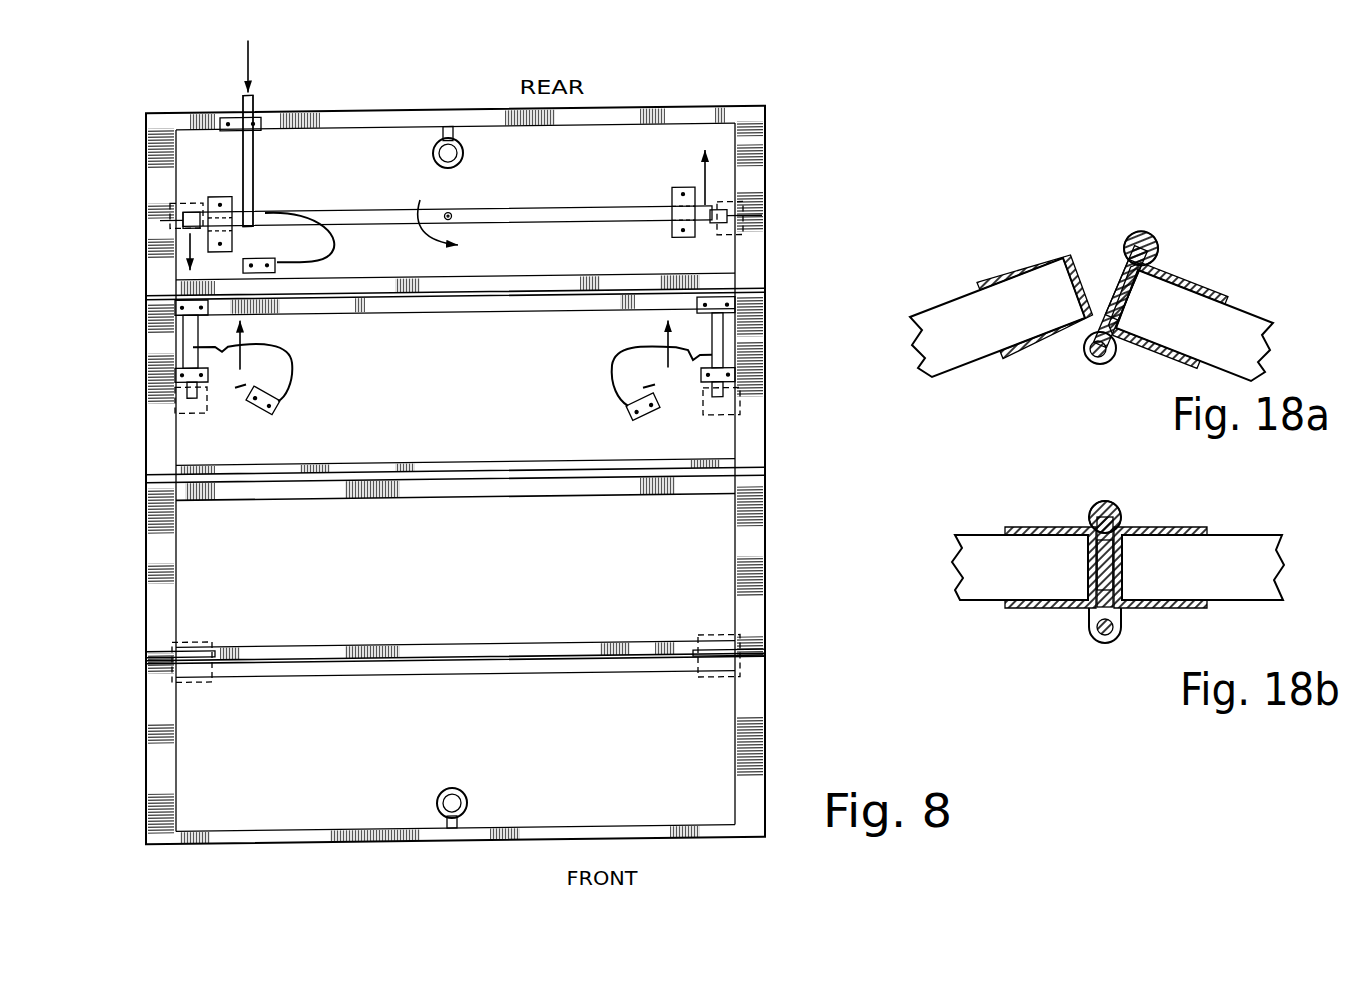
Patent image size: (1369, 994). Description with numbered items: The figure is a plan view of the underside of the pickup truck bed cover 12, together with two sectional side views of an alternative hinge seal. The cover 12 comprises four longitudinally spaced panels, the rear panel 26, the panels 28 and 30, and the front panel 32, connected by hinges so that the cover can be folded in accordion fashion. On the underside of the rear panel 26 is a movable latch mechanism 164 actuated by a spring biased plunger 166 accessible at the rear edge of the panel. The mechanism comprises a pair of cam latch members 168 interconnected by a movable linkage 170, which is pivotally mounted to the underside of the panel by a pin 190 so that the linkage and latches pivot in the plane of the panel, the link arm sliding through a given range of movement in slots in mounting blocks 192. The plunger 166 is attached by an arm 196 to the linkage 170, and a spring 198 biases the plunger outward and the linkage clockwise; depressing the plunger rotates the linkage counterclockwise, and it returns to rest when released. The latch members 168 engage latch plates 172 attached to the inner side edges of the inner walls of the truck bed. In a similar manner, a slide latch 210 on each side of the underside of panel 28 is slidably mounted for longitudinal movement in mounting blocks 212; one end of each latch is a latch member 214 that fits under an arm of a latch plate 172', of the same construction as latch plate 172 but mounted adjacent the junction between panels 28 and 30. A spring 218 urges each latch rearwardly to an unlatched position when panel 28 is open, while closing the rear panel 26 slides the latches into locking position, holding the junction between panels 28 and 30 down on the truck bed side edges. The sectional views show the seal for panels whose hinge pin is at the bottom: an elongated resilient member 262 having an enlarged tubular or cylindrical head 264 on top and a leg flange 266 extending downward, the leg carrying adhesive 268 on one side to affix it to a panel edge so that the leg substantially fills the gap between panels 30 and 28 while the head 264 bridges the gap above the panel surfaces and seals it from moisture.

In FIG. 8, the cover 12 is at (793, 649).
In FIG. 8, the rear panel 26 is at (559, 187).
In FIG. 8, the panel 28 is at (442, 400).
In FIG. 18A, the panel 28 is at (1201, 344).
In FIG. 18B, the panel 28 is at (1216, 576).
In FIG. 8, the panel 30 is at (439, 590).
In FIG. 18A, the panel 30 is at (974, 334).
In FIG. 18B, the panel 30 is at (998, 576).
In FIG. 8, the front panel 32 is at (439, 740).
In FIG. 8, the latch mechanism 164 is at (347, 167).
In FIG. 8, the plunger 166 is at (258, 99).
In FIG. 8, the cam latch members 168 is at (186, 207).
In FIG. 8, the linkage 170 is at (537, 218).
In FIG. 8, the latch plates 172 is at (461, 202).
In FIG. 8, the latch plate 172' is at (516, 426).
In FIG. 8, the pin 190 is at (448, 213).
In FIG. 8, the mounting blocks 192 is at (220, 200).
In FIG. 8, the arm 196 is at (250, 160).
In FIG. 8, the spring 198 is at (330, 248).
In FIG. 8, the slide latch 210 is at (188, 327).
In FIG. 8, the mounting blocks 212 is at (175, 304).
In FIG. 8, the latch member 214 is at (187, 397).
In FIG. 8, the spring 218 is at (296, 368).
In FIG. 18A, the resilient member 262 is at (1120, 262).
In FIG. 18B, the resilient member 262 is at (1098, 500).
In FIG. 18A, the head 264 is at (1160, 238).
In FIG. 18B, the head 264 is at (1122, 517).
In FIG. 18A, the leg flange 266 is at (1120, 278).
In FIG. 18B, the leg flange 266 is at (1107, 583).
In FIG. 18A, the adhesive 268 is at (1140, 293).
In FIG. 18B, the adhesive 268 is at (1115, 553).